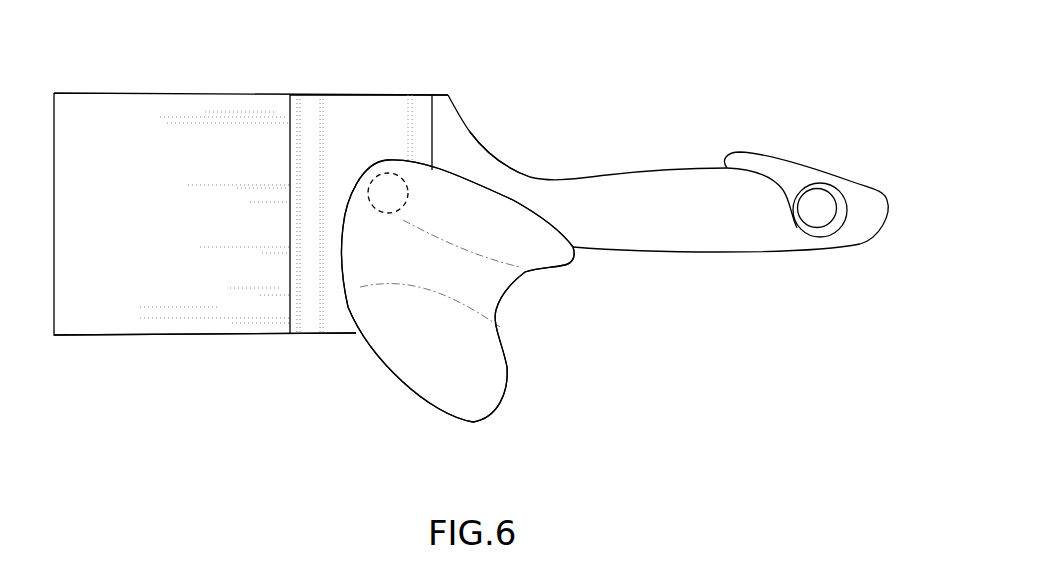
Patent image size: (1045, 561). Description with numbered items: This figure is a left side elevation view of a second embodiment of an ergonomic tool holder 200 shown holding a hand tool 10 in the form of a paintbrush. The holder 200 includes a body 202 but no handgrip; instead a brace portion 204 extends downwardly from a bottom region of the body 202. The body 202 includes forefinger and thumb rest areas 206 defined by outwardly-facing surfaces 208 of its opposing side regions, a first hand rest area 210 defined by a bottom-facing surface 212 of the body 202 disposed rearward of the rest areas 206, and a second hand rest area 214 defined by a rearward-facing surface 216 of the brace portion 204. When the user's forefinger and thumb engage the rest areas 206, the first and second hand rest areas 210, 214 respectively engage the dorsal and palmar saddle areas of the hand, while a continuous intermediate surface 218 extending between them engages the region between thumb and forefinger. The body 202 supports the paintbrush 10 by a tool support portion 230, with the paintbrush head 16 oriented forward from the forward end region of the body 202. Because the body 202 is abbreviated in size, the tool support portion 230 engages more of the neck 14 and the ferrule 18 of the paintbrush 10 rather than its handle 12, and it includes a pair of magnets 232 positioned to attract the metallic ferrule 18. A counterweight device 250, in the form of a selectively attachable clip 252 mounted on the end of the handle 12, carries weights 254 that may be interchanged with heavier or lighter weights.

The hand tool 10 is at (193, 348).
The handle 12 is at (862, 243).
The neck 14 is at (455, 110).
The paintbrush head 16 is at (172, 85).
The ferrule 18 is at (370, 136).
The ergonomic tool holder 200 is at (372, 353).
The body 202 is at (543, 202).
The brace portion 204 is at (443, 415).
The forefinger and thumb rest areas 206 is at (430, 267).
The outwardly-facing surfaces 208 is at (452, 283).
The first hand rest area 210 is at (552, 265).
The bottom-facing surface 212 is at (535, 282).
The second hand rest area 214 is at (510, 395).
The rearward-facing surface 216 is at (521, 380).
The continuous intermediate surface 218 is at (505, 297).
The tool support portion 230 is at (472, 170).
The magnets 232 is at (390, 175).
The counterweight device 250 is at (779, 148).
The clip 252 is at (848, 210).
The weights 254 is at (817, 189).